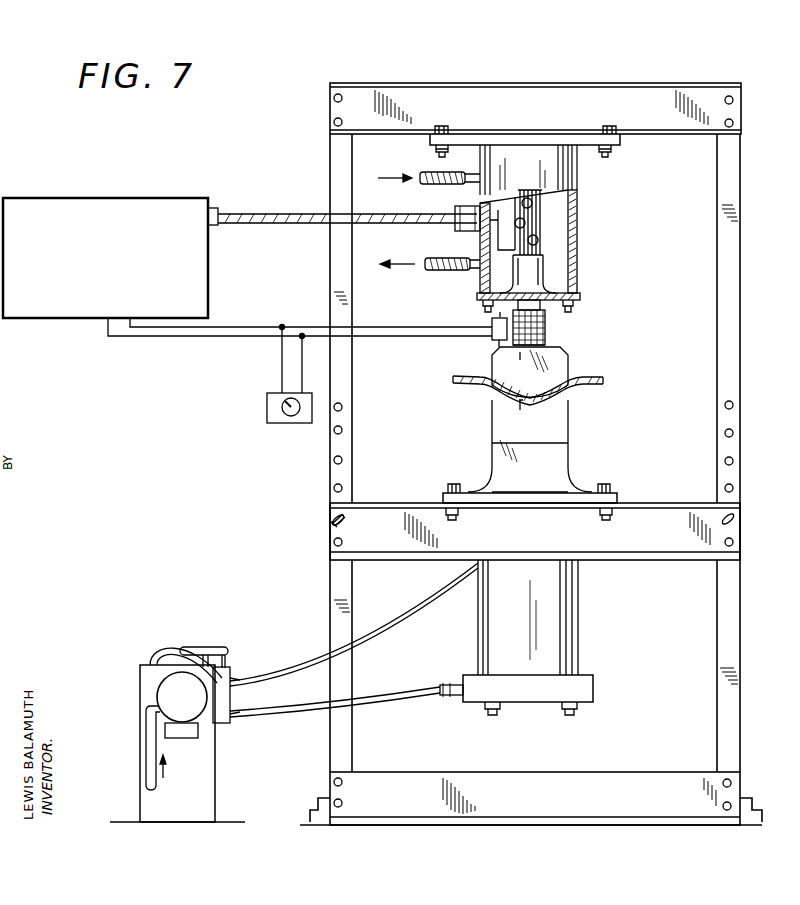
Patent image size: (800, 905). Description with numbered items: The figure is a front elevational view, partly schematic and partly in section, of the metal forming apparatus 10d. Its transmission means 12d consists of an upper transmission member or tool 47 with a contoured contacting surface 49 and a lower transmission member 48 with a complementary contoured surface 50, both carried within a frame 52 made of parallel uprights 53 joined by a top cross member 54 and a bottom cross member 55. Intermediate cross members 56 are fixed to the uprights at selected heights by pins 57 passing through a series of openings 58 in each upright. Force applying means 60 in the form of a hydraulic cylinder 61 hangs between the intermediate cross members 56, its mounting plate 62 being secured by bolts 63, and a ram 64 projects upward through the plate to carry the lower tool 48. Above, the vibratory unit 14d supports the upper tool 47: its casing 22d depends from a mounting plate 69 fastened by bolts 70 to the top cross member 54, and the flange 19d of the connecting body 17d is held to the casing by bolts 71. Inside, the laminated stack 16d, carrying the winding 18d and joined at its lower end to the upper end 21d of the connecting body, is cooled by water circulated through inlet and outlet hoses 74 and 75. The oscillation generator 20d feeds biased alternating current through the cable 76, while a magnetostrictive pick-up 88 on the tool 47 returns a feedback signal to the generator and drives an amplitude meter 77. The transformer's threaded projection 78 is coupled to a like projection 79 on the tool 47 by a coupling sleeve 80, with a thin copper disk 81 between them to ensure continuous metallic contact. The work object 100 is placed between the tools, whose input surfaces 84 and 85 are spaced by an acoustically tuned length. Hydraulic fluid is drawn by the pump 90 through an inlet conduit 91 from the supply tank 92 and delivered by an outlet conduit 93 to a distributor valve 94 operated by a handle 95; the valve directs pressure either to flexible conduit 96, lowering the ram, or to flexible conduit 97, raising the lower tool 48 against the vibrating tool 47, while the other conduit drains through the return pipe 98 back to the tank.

The apparatus 10d is at (345, 293).
The transmission means 12d is at (488, 458).
The vibratory unit 14d is at (578, 222).
The stack 16d is at (540, 226).
The connecting body 17d is at (575, 292).
The winding 18d is at (546, 241).
The flange 19d is at (492, 322).
The generator 20d is at (120, 198).
The upper end of connecting body 21d is at (548, 268).
The casing 22d is at (578, 175).
The upper transmission member 47 is at (572, 392).
The lower transmission member 48 is at (568, 424).
The contoured output surface 49 is at (492, 396).
The complementary contoured output surface 50 is at (520, 410).
The frame 52 is at (753, 683).
The uprights 53 is at (740, 193).
The top cross member 54 is at (738, 108).
The bottom cross member 55 is at (733, 793).
The intermediate cross members 56 is at (735, 540).
The pins 57 is at (333, 519).
The openings 58 is at (735, 405).
The force applying means 60 is at (593, 580).
The hydraulic cylinder 61 is at (575, 633).
The mounting plate 62 is at (618, 498).
The bolts 63 is at (611, 488).
The ram 64 is at (560, 470).
The mounting plate 69 is at (620, 145).
The bolts 70 is at (608, 126).
The bolts 71 is at (573, 310).
The inlet hose 74 is at (422, 172).
The outlet hose 75 is at (445, 270).
The cable 76 is at (285, 214).
The amplitude meter 77 is at (267, 417).
The threaded projection 78 is at (545, 318).
The threaded projection 79 is at (519, 363).
The coupling sleeve 80 is at (568, 360).
The thin disk 81 is at (548, 338).
The input surface 84 is at (493, 340).
The input surface 85 is at (548, 447).
The magnetostrictive pick-up 88 is at (470, 327).
The pump 90 is at (160, 688).
The inlet conduit 91 is at (146, 762).
The supply tank 92 is at (205, 782).
The outlet conduit 93 is at (225, 724).
The distributor valve 94 is at (232, 698).
The handle 95 is at (205, 648).
The flexible conduit 96 is at (415, 615).
The flexible conduit 97 is at (405, 700).
The return pipe 98 is at (164, 650).
The work object 100 is at (603, 381).